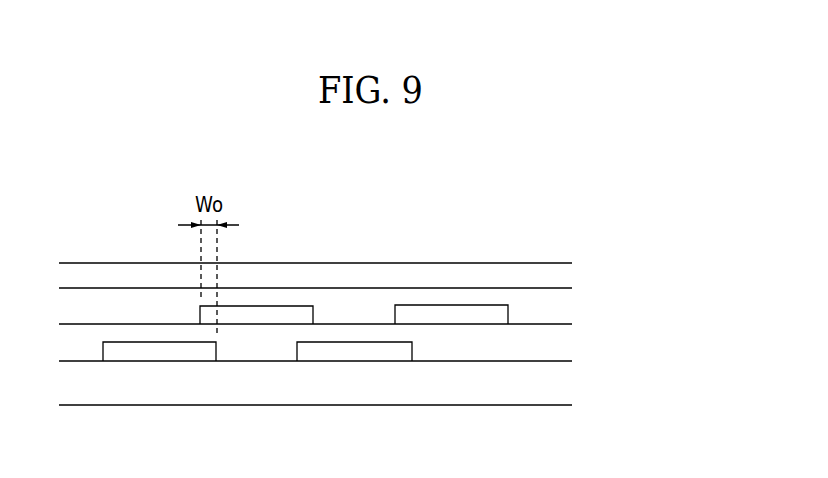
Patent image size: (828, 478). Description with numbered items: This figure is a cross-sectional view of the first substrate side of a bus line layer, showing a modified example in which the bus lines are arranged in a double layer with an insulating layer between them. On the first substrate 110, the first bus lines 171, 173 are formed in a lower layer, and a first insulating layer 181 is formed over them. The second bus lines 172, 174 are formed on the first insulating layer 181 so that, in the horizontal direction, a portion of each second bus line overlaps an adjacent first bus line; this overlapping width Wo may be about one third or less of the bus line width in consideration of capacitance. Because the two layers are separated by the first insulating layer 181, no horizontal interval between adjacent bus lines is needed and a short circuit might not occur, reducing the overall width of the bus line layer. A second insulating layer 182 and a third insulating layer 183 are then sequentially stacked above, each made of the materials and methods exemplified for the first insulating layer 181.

The first substrate 110 is at (558, 384).
The first bus line 171 is at (158, 350).
The second bus line 172 is at (258, 315).
The first bus line 173 is at (354, 350).
The second bus line 174 is at (452, 316).
The first insulating layer 181 is at (558, 344).
The second insulating layer 182 is at (558, 308).
The third insulating layer 183 is at (558, 276).